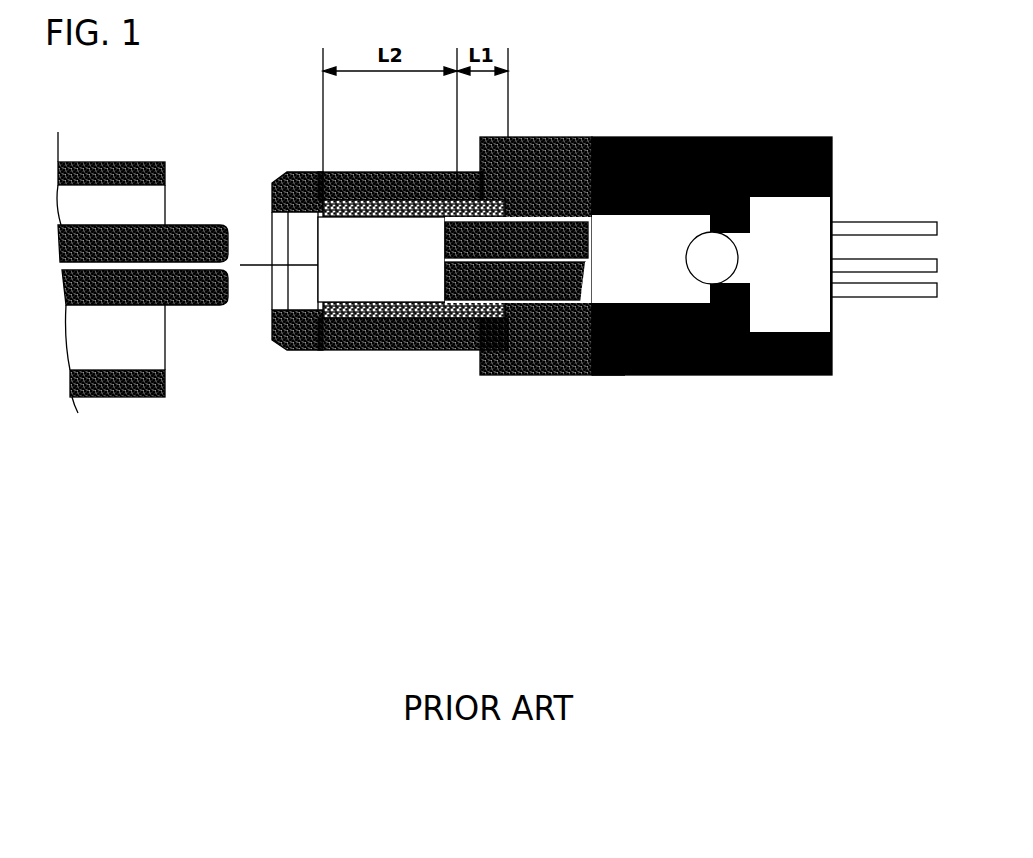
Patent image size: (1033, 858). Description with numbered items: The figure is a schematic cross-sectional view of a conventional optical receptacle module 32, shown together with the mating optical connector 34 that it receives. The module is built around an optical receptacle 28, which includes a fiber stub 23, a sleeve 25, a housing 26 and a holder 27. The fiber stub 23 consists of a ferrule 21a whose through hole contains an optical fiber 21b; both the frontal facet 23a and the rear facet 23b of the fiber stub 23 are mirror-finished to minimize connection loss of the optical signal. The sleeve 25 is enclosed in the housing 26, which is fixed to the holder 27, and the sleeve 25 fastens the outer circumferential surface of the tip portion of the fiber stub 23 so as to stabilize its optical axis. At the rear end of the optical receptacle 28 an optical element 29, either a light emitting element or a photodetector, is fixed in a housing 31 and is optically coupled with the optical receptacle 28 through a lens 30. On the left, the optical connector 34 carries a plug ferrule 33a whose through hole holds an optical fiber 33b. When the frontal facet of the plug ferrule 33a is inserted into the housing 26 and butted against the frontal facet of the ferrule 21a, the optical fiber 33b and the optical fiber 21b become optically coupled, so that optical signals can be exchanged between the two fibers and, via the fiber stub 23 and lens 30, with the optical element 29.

The ferrule 21a is at (457, 315).
The optical fiber 21b is at (500, 375).
The fiber stub 23 is at (497, 438).
The frontal facet 23a is at (445, 238).
The rear facet 23b is at (614, 409).
The sleeve 25 is at (350, 350).
The housing 26 is at (287, 173).
The holder 27 is at (522, 137).
The optical receptacle 28 is at (436, 304).
The optical element 29 is at (773, 212).
The lens 30 is at (708, 250).
The housing 31 is at (764, 207).
The optical receptacle module 32 is at (586, 336).
The plug ferrule 33a is at (133, 305).
The optical fiber 33b is at (172, 305).
The optical connector 34 is at (142, 335).